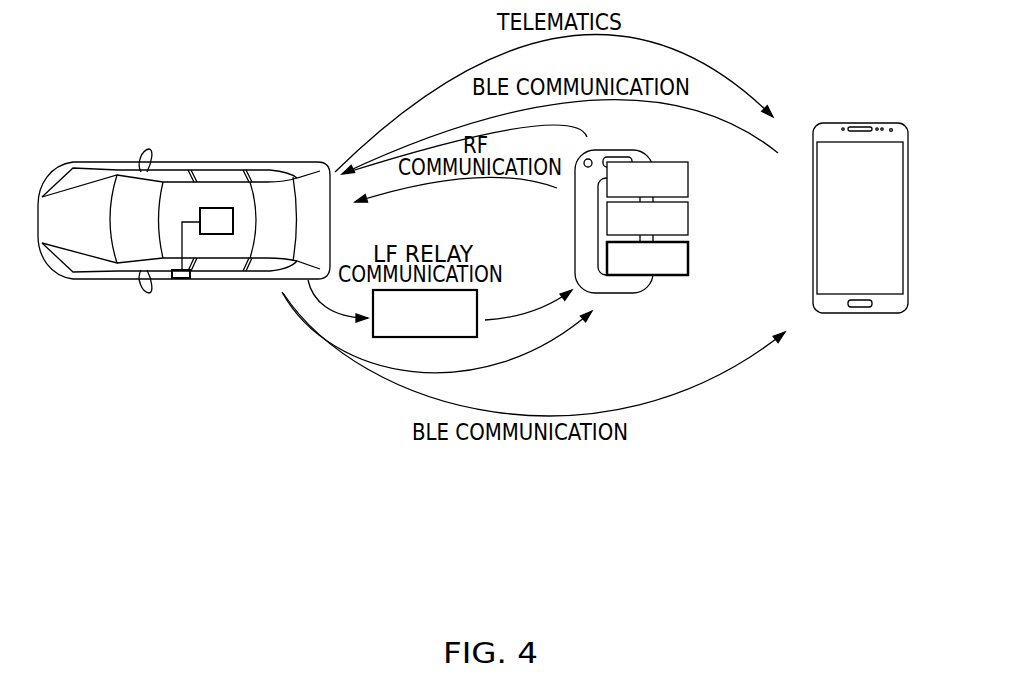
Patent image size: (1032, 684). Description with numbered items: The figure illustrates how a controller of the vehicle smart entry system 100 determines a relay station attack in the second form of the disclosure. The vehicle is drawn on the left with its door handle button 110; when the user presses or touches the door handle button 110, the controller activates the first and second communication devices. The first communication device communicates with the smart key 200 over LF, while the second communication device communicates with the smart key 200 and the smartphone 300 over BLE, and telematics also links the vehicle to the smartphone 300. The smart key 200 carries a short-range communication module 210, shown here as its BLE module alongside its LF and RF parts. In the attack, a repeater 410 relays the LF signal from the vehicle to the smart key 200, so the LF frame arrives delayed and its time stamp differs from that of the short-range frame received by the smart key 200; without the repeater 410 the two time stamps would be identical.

The vehicle smart entry system 100 is at (217, 208).
The door handle button 110 is at (182, 279).
The smart key 200 is at (662, 199).
The short-range communication module 210 is at (690, 258).
The smartphone 300 is at (860, 123).
The repeater 410 is at (478, 301).